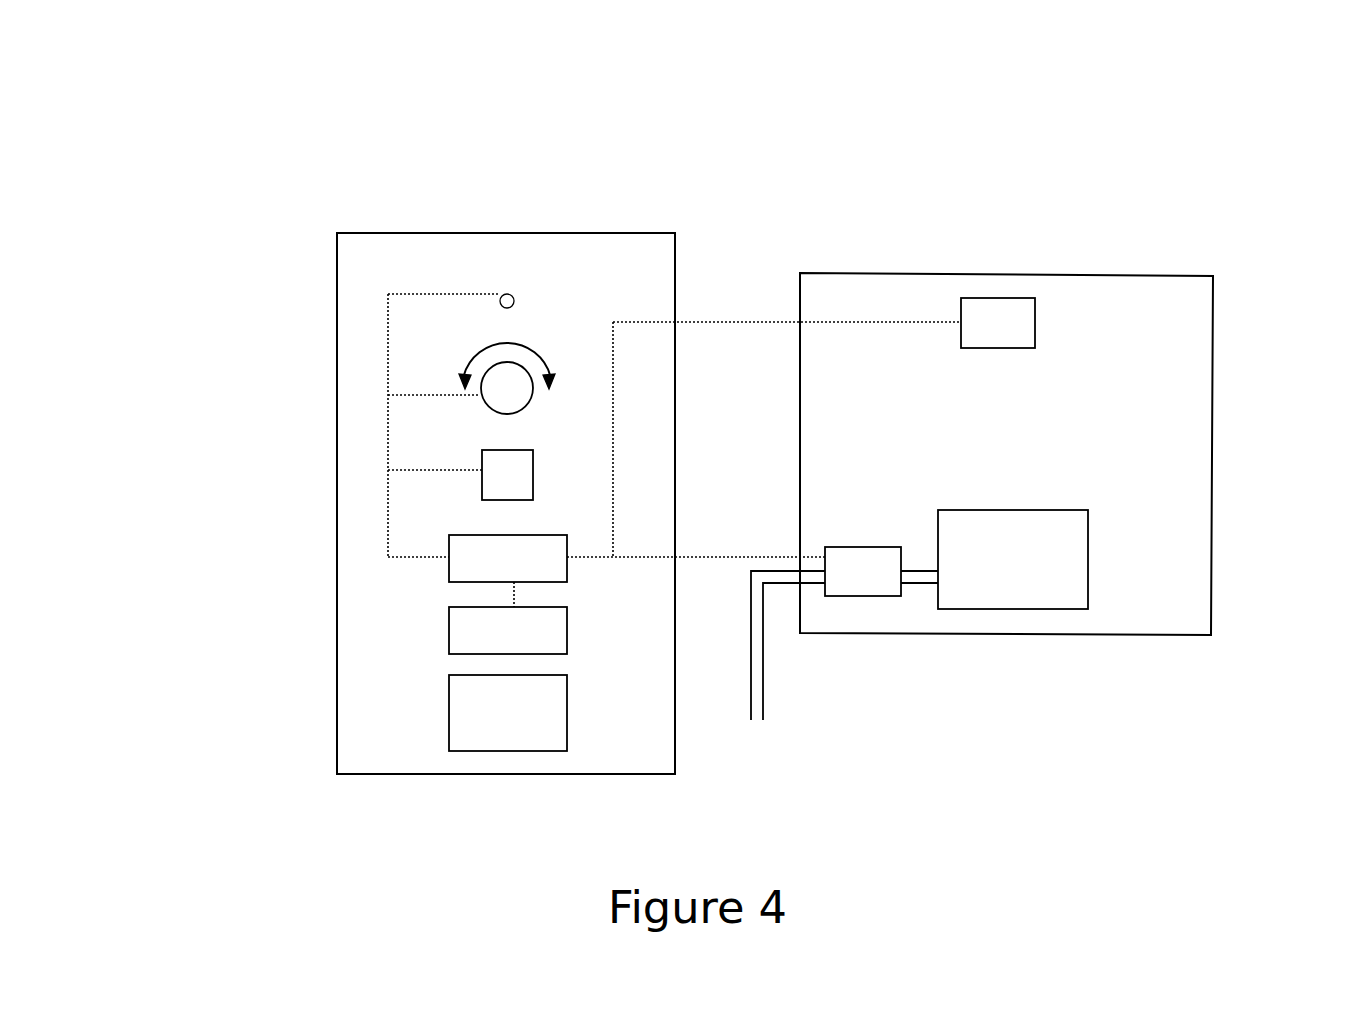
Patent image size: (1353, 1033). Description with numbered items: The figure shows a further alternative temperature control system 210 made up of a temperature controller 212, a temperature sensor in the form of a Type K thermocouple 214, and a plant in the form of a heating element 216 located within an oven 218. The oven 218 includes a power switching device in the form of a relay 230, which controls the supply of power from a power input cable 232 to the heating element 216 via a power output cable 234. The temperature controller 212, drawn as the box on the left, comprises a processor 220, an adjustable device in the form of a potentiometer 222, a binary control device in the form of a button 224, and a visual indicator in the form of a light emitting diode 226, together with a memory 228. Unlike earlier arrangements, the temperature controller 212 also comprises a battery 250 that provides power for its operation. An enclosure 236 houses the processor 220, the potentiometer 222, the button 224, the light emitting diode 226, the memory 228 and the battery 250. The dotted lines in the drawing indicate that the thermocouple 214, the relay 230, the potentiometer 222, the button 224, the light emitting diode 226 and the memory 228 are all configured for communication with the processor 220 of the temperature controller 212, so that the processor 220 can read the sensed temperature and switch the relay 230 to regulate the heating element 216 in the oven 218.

The temperature control system 210 is at (767, 148).
The temperature controller 212 is at (273, 755).
The thermocouple 214 is at (992, 312).
The heating element 216 is at (1057, 587).
The oven 218 is at (1211, 355).
The processor 220 is at (449, 572).
The potentiometer 222 is at (488, 405).
The button 224 is at (480, 482).
The light emitting diode 226 is at (508, 292).
The memory 228 is at (455, 631).
The relay 230 is at (863, 585).
The power input cable 232 is at (757, 733).
The power output cable 234 is at (922, 588).
The enclosure 236 is at (395, 772).
The battery 250 is at (515, 737).